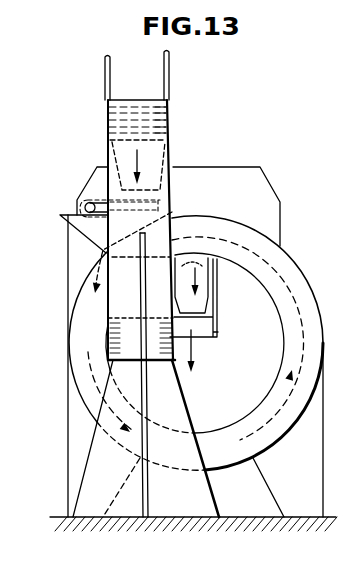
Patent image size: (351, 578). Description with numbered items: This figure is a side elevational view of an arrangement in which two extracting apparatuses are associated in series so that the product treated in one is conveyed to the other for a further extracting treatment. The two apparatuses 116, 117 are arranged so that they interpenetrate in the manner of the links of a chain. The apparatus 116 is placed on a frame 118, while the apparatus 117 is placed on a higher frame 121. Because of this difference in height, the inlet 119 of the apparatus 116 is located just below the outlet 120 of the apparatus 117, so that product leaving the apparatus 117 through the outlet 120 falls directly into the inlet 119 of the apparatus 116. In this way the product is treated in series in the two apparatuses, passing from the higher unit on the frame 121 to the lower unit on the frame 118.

The apparatus 116 is at (78, 377).
The apparatus 117 is at (106, 336).
The frame 118 is at (283, 481).
The inlet 119 is at (81, 228).
The outlet 120 is at (163, 192).
The frame 121 is at (148, 399).